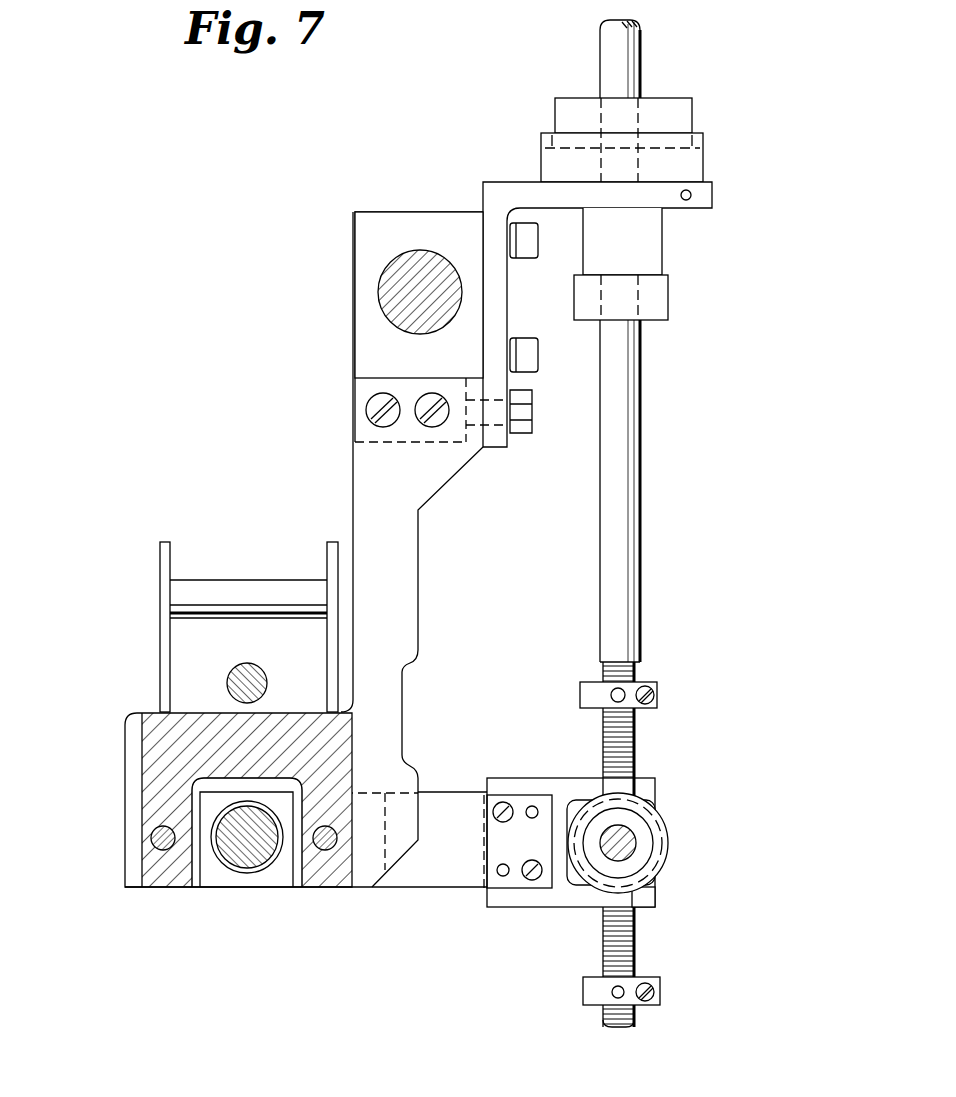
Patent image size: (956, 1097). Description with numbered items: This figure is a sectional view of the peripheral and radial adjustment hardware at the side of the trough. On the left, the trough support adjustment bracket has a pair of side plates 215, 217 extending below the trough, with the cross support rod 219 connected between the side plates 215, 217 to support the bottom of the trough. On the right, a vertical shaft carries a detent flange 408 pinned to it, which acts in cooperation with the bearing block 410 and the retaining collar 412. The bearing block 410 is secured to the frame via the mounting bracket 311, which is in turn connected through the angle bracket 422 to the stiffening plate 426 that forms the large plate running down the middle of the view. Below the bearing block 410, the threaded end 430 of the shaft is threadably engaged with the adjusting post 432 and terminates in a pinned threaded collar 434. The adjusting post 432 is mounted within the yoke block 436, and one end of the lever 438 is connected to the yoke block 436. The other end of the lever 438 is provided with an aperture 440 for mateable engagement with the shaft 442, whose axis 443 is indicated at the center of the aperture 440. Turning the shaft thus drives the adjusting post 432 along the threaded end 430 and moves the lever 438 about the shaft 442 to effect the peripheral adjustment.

The side plate 215 is at (165, 542).
The side plate 217 is at (333, 542).
The cross support rod 219 is at (284, 548).
The mounting bracket 311 is at (705, 195).
The detent flange 408 is at (683, 117).
The bearing block 410 is at (655, 248).
The retaining collar 412 is at (655, 300).
The angle bracket 422 is at (372, 455).
The stiffening plate 426 is at (402, 573).
The threaded end 430 is at (637, 943).
The adjusting post 432 is at (670, 830).
The pinned threaded collar 434 is at (660, 990).
The yoke block 436 is at (653, 897).
The lever 438 is at (433, 863).
The aperture 440 is at (257, 857).
The shaft 442 is at (245, 858).
The axis 443 is at (225, 863).